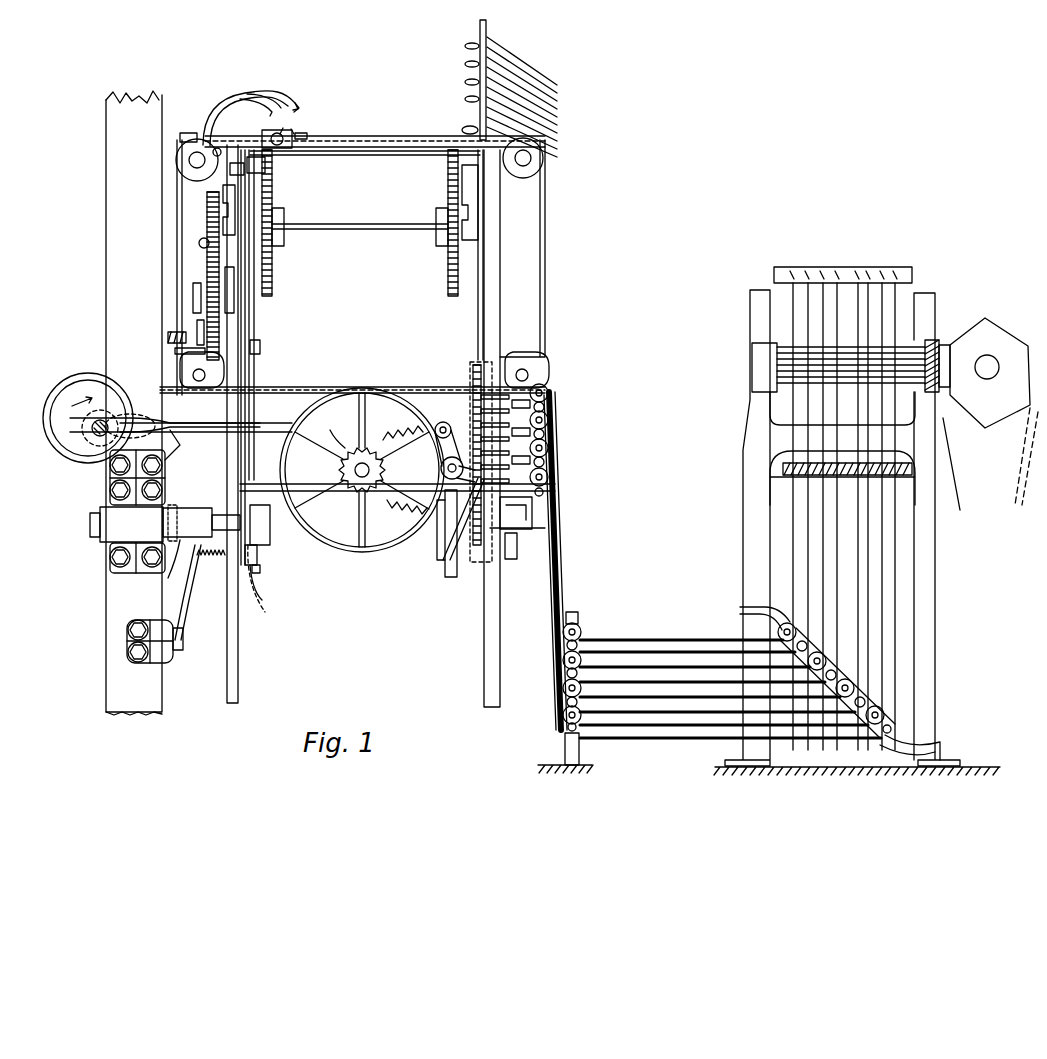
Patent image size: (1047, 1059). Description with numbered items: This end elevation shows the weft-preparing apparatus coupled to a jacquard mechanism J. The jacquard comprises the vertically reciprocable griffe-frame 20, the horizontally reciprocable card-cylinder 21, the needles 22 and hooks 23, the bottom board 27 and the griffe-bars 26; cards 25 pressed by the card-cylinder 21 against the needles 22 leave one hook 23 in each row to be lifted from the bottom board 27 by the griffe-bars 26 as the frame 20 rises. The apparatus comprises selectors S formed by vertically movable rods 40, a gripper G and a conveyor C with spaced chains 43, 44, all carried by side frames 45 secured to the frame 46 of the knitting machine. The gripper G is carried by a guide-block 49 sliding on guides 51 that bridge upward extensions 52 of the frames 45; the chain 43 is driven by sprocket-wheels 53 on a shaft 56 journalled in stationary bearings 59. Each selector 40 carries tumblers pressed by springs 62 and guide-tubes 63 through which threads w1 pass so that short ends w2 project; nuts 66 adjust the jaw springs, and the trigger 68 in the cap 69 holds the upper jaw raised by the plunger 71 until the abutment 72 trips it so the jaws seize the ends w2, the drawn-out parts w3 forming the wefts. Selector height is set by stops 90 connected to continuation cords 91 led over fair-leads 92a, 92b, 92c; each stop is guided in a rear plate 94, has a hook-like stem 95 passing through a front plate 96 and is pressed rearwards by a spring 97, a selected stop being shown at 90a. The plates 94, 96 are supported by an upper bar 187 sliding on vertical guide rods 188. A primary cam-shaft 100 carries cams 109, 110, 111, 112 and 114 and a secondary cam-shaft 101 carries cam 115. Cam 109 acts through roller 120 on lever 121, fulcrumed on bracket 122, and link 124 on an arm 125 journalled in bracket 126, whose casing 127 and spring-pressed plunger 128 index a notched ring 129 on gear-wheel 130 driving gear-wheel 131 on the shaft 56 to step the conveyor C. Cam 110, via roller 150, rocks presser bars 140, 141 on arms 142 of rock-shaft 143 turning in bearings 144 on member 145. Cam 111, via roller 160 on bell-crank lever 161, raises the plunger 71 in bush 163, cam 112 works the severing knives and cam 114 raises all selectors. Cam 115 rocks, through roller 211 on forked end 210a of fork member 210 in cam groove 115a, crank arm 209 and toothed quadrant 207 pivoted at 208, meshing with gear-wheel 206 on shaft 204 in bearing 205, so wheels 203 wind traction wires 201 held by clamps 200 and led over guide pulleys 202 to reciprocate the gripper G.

The griffe-frame 20 is at (913, 275).
The card-cylinder 21 is at (984, 373).
The needles 22 is at (912, 360).
The hooks 23 is at (900, 332).
The cards 25 is at (1005, 436).
The griffe-bars 26 is at (904, 268).
The bottom board 27 is at (900, 462).
The selector rods 40 is at (480, 22).
The conveyor chain 43 is at (449, 281).
The conveyor chain 44 is at (273, 272).
The side frames 45 is at (239, 671).
The frame of the knitting machine 46 is at (134, 403).
The guide-block 49 is at (304, 136).
The guides 51 is at (352, 147).
The upward extensions 52 is at (484, 210).
The sprocket-wheels 53 is at (284, 232).
The shaft 56 is at (352, 226).
The stationary bearings 59 is at (229, 206).
The spring 62 is at (466, 64).
The guide-tubes 63 is at (466, 46).
The nuts 66 is at (284, 129).
The trigger 68 is at (290, 152).
The cap 69 is at (292, 133).
The plunger 71 is at (256, 335).
The abutment 72 is at (465, 128).
The stops 90 is at (472, 391).
The stop in operative position 90a is at (440, 474).
The continuation cords 91 is at (566, 541).
The fair-lead 92a is at (762, 612).
The fair-lead 92b is at (582, 645).
The fair-lead 92c is at (549, 476).
The rear plate 94 is at (472, 380).
The hook-like stem 95 is at (549, 405).
The front plate 96 is at (549, 420).
The springs 97 is at (444, 556).
The primary cam-shaft 100 is at (88, 524).
The secondary cam-shaft 101 is at (98, 437).
The cam 109 is at (168, 570).
The cam 110 is at (256, 577).
The cam 111 is at (261, 567).
The cam 112 is at (452, 578).
The cam 114 is at (517, 512).
The cam 115 is at (118, 398).
The eccentric cam groove 115a is at (90, 385).
The roller 120 is at (179, 510).
The lever 121 is at (184, 612).
The stationary bracket 122 is at (173, 637).
The link 124 is at (180, 351).
The arm 125 is at (225, 276).
The bracket 126 is at (193, 298).
The casing 127 is at (168, 336).
The spring-pressed plunger 128 is at (197, 327).
The notched ring 129 is at (200, 245).
The gear-wheel 130 is at (212, 256).
The gear-wheel 131 is at (207, 211).
The presser bar 140 is at (298, 104).
The presser bar 141 is at (276, 104).
The arms 142 is at (250, 95).
The rock-shaft 143 is at (212, 152).
The bearings 144 is at (215, 160).
The member 145 is at (230, 170).
The roller 150 is at (266, 606).
The roller 160 is at (258, 547).
The bell-crank lever 161 is at (261, 347).
The fixed bush 163 is at (266, 171).
The upper bar 187 is at (476, 368).
The vertical guide rods 188 is at (476, 378).
The clamp 200 is at (262, 137).
The traction wires 201 is at (400, 136).
The guide pulleys 202 is at (184, 146).
The wheels 203 is at (306, 422).
The shaft 204 is at (340, 470).
The stationary bearing 205 is at (340, 480).
The gear-wheel 206 is at (344, 442).
The toothed quadrant 207 is at (394, 433).
The pivot 208 is at (397, 500).
The crank arm 209 is at (443, 422).
The fork member 210 is at (273, 433).
The forked end 210a is at (181, 433).
The roller 211 is at (112, 426).
The conveyor C is at (360, 223).
The gripper G is at (262, 135).
The jacquard mechanism J is at (857, 519).
The selectors S is at (496, 23).
The thread w1 is at (536, 82).
The thread ends w2 is at (466, 82).
The thread parts w3 is at (347, 150).